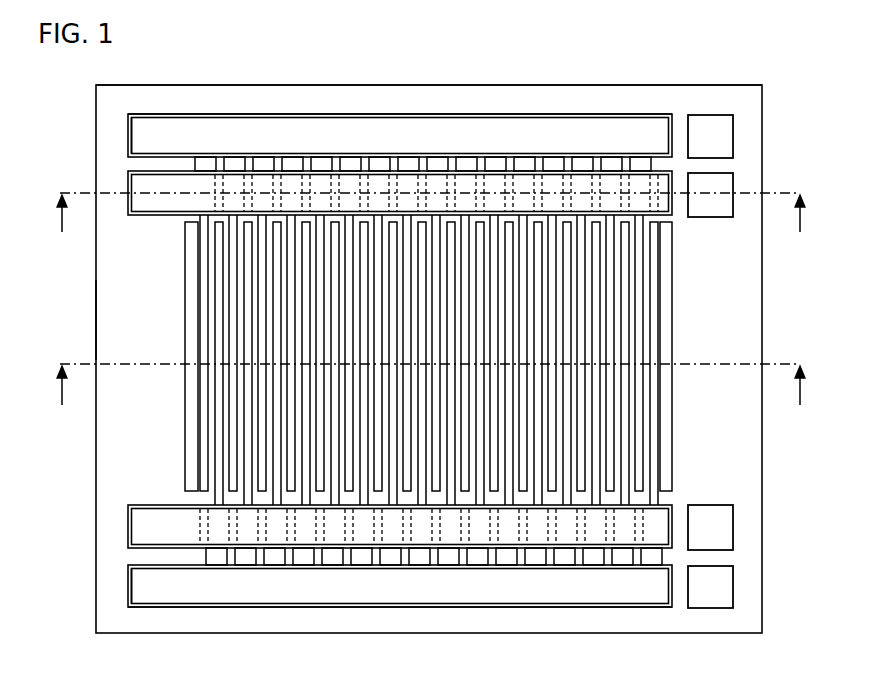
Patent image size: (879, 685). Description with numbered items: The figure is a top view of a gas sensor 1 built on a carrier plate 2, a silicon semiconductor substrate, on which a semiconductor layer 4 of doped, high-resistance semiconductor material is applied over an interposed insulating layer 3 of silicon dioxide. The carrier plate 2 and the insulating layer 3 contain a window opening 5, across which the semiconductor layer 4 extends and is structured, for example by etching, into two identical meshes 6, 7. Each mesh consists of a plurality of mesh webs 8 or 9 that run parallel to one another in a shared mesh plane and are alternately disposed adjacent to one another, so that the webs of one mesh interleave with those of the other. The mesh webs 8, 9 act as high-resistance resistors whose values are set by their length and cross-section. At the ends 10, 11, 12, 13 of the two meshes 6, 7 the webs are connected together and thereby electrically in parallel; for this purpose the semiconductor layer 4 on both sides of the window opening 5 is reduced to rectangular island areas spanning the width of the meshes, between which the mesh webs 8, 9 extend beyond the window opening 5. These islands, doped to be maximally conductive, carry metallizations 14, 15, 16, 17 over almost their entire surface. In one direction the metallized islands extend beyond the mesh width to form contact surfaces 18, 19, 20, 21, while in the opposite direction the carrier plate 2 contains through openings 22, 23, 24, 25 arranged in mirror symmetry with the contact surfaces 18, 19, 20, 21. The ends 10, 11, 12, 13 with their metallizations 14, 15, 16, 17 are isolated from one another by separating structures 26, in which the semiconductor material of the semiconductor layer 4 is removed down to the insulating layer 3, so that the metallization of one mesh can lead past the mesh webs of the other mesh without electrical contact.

The gas sensor 1 is at (650, 64).
The carrier plate 2 is at (468, 86).
The insulating layer 3 is at (355, 86).
The semiconductor layer 4 is at (541, 115).
The window opening 5 is at (668, 320).
The mesh 6 is at (668, 437).
The mesh 7 is at (197, 436).
The mesh webs 8 is at (620, 400).
The mesh webs 9 is at (232, 400).
The mesh end 10 is at (126, 525).
The mesh end 11 is at (126, 131).
The mesh end 12 is at (126, 184).
The mesh end 13 is at (126, 585).
The metallization 14 is at (188, 533).
The metallization 15 is at (286, 130).
The metallization 16 is at (206, 185).
The metallization 17 is at (308, 590).
The contact surface 18 is at (147, 522).
The contact surface 19 is at (150, 130).
The contact surface 20 is at (149, 200).
The contact surface 21 is at (145, 583).
The through opening 22 is at (708, 505).
The through opening 23 is at (710, 115).
The through opening 24 is at (709, 218).
The through opening 25 is at (733, 587).
The separating structure 26 is at (115, 310).